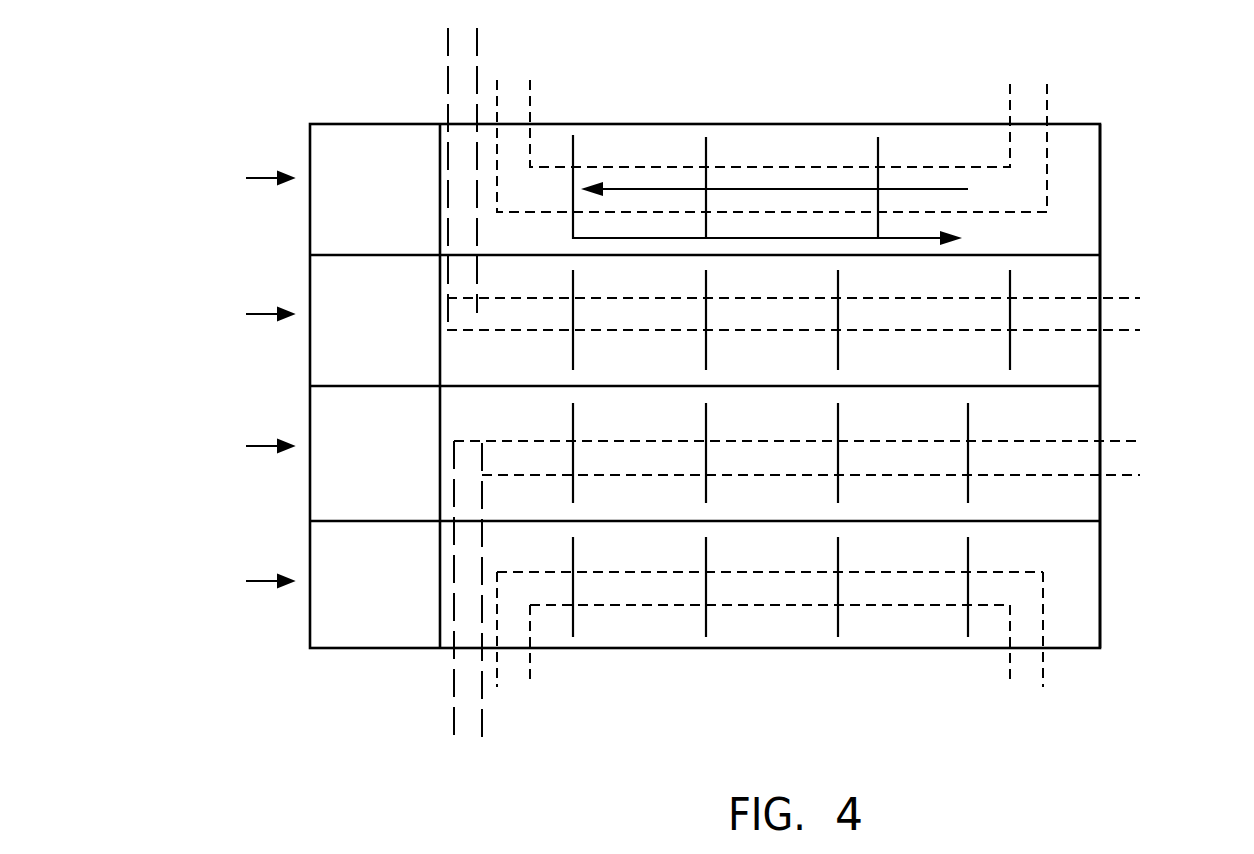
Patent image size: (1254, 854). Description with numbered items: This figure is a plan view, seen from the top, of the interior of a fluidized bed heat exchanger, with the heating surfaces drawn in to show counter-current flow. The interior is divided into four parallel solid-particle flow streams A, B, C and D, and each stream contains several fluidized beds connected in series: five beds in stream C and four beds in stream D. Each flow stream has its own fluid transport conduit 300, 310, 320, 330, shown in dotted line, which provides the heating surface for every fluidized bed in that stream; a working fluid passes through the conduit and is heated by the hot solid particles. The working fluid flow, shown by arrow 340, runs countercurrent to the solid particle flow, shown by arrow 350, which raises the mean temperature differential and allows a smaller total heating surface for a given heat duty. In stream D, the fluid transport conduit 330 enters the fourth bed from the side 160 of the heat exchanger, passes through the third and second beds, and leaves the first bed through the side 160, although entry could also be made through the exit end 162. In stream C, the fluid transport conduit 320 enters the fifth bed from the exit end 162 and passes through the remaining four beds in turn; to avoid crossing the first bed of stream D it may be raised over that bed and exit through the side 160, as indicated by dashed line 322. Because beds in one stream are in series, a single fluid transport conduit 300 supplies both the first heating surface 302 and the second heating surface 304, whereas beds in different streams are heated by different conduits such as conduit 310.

The side 160 is at (855, 124).
The exit end 162 is at (1098, 277).
The fluid transport conduit 300 is at (808, 685).
The first heating surface 302 is at (517, 622).
The second heating surface 304 is at (655, 585).
The fluid transport conduit 310 is at (1120, 453).
The fluid transport conduit 320 is at (776, 178).
The dashed line 322 is at (448, 202).
The fluid transport conduit 330 is at (1032, 82).
The working fluid flow arrow 340 is at (890, 188).
The solid particles flow arrow 350 is at (663, 239).